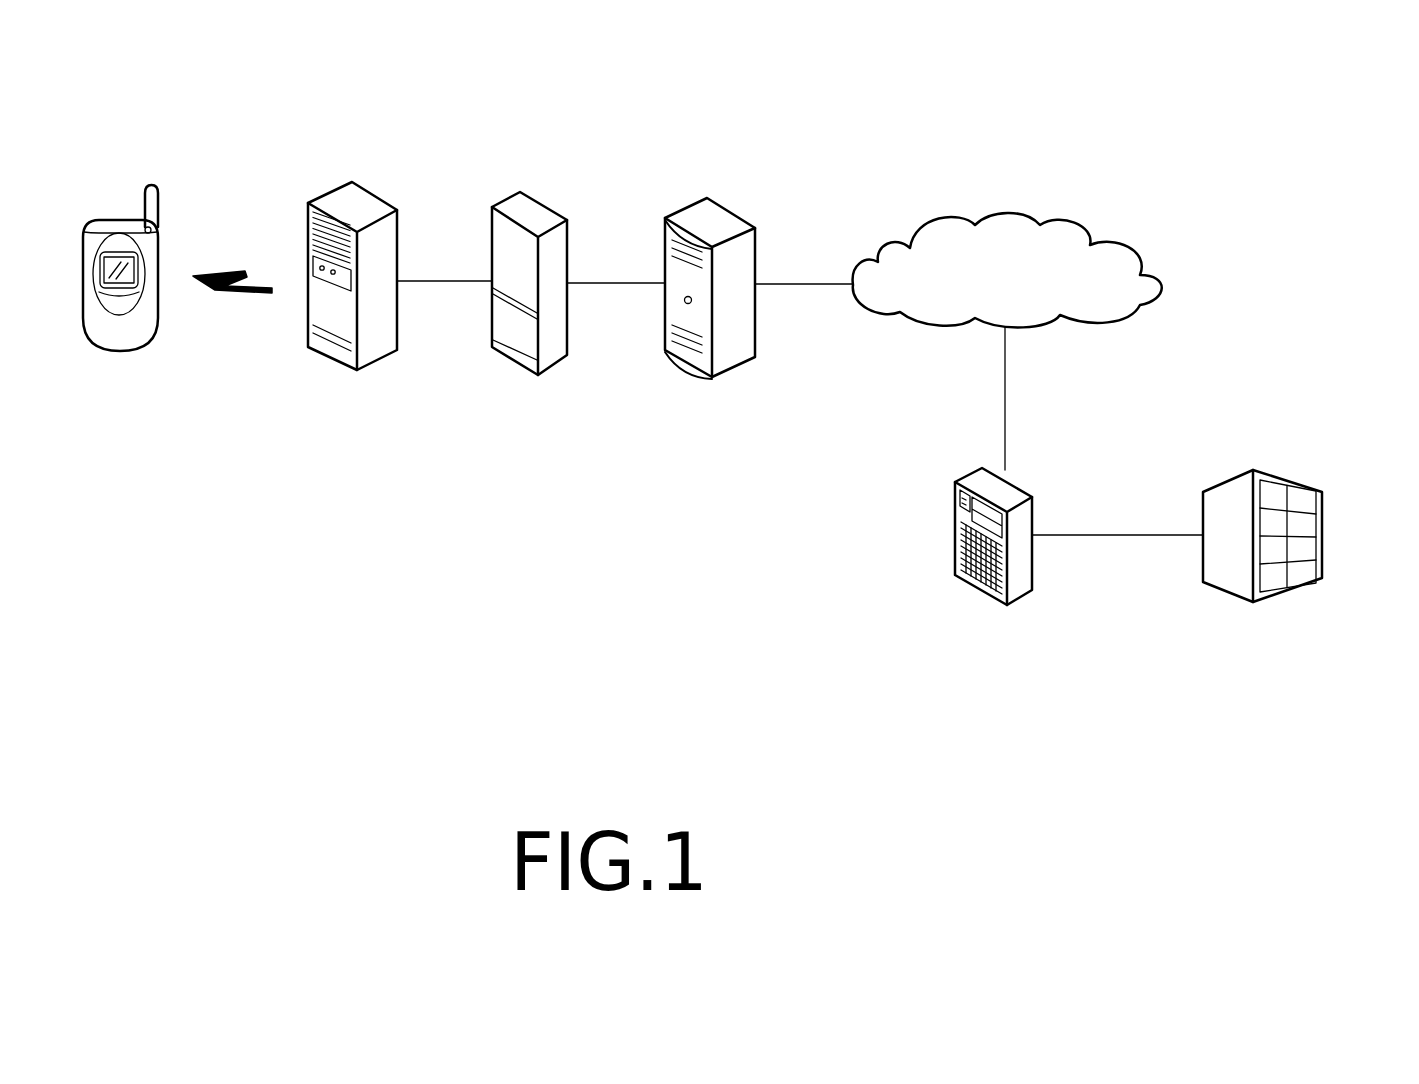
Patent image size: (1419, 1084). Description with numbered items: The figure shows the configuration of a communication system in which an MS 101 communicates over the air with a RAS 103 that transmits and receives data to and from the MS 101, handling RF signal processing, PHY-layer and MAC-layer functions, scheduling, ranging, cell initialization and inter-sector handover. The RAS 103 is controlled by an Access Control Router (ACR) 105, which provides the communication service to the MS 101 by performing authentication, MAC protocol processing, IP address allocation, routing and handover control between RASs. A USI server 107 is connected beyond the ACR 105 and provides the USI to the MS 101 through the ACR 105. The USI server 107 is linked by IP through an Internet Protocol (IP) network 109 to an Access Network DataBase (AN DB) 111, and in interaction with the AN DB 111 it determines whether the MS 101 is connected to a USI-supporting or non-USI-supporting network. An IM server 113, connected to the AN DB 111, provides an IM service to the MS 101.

The MS 101 is at (117, 221).
The RAS 103 is at (368, 189).
The Access Control Router (ACR) 105 is at (541, 200).
The USI server 107 is at (728, 206).
The Internet Protocol (IP) network 109 is at (1003, 215).
The Access Network DataBase (AN DB) 111 is at (955, 531).
The IM server 113 is at (1322, 533).